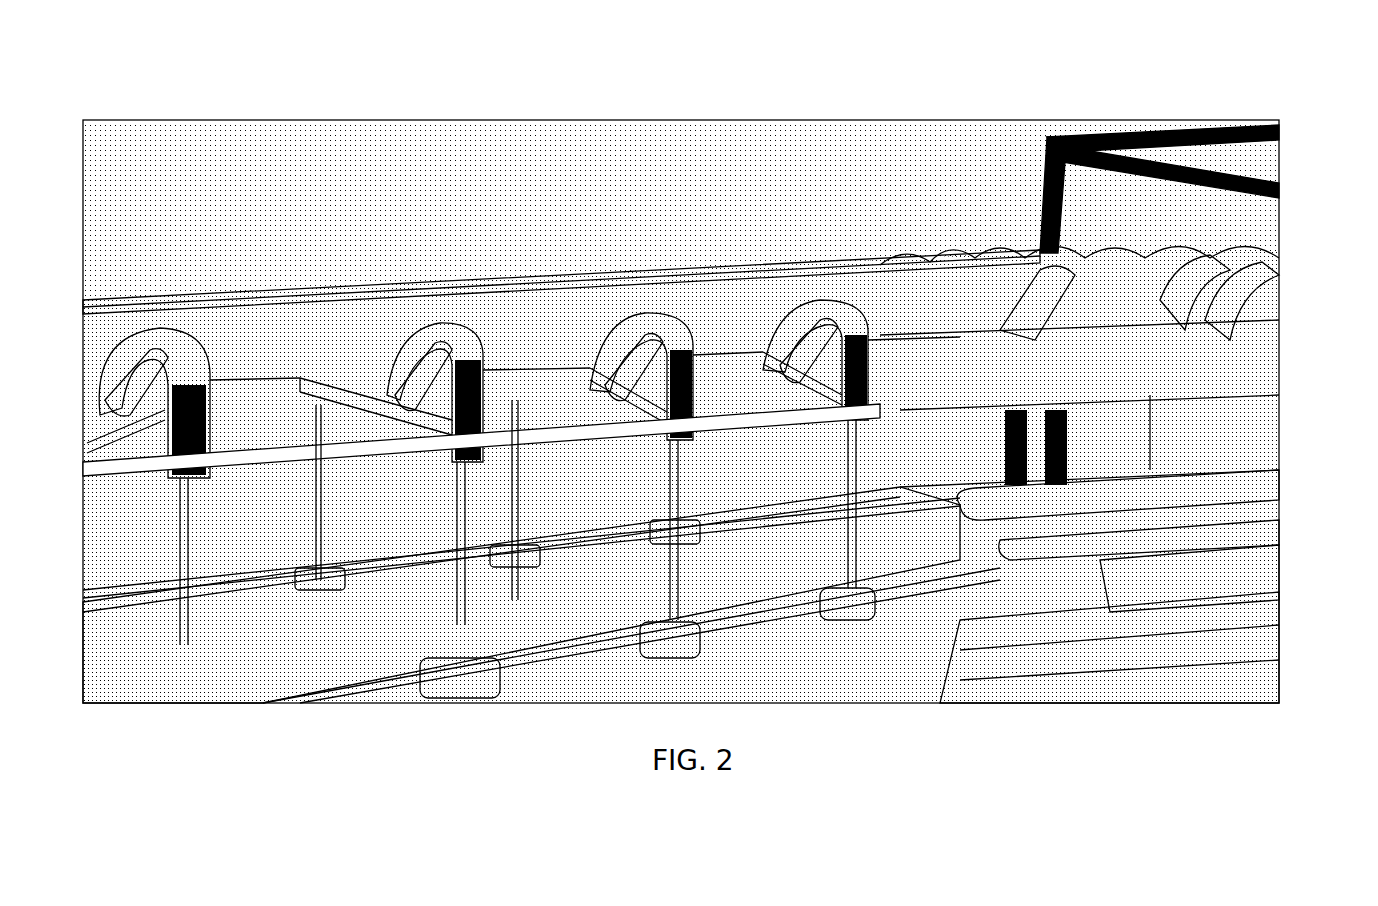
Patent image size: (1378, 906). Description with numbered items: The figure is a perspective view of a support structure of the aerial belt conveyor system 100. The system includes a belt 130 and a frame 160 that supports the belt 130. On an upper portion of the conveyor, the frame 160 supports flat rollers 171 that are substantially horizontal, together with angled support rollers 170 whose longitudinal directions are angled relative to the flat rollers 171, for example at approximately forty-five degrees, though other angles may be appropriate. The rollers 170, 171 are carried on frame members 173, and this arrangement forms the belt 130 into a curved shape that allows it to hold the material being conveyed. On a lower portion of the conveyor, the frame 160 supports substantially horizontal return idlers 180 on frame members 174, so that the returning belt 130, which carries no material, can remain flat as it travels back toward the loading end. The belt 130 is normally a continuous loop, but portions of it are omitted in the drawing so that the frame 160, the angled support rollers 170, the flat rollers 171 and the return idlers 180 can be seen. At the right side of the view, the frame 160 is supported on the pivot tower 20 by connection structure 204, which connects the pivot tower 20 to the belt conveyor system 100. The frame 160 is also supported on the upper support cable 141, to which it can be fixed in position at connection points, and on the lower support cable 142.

The pivot tower 20 is at (1093, 132).
The belt conveyor system 100 is at (192, 240).
The belt 130 is at (632, 284).
The upper support cable 141 is at (222, 405).
The lower support cable 142 is at (410, 695).
The frame 160 is at (676, 558).
The angled support roller 170 is at (796, 352).
The flat roller 171 is at (742, 352).
The frame member 173 is at (851, 340).
The frame member 174 is at (1182, 548).
The return idler 180 is at (988, 502).
The connection structure 204 is at (1205, 402).